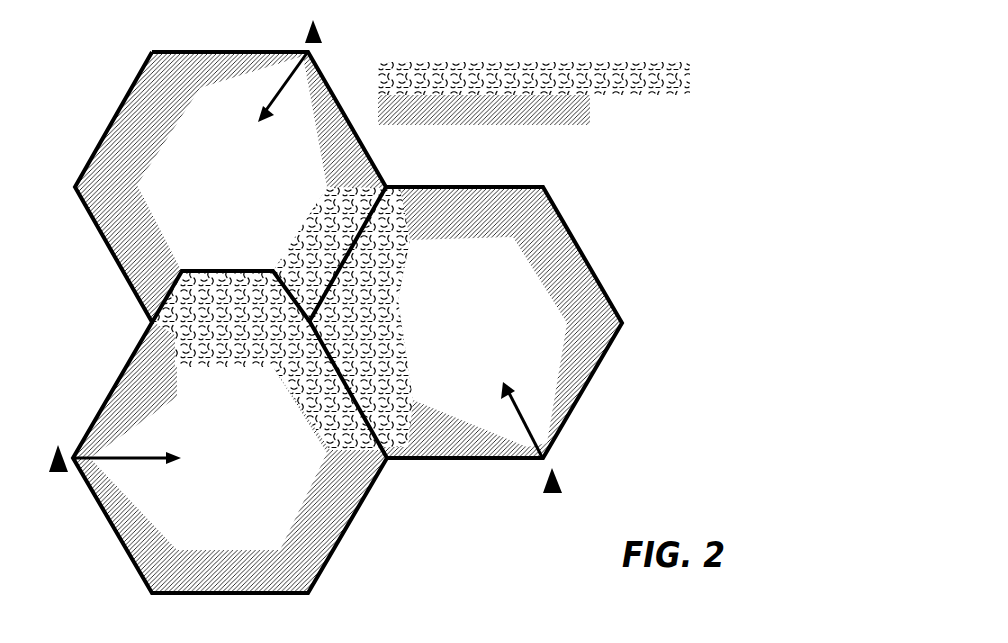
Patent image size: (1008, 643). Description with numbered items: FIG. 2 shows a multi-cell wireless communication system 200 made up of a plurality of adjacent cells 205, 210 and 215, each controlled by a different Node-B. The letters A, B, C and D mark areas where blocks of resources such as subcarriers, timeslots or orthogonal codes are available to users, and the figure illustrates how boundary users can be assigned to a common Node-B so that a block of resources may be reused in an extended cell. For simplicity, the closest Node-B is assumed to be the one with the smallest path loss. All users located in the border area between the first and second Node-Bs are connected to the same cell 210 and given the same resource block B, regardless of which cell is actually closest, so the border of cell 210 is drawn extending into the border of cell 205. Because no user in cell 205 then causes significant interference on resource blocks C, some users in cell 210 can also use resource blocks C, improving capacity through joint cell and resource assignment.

The multi-cell wireless communication system 200 is at (422, 306).
The cell 205 is at (107, 136).
The cell 210 is at (123, 548).
The cell 215 is at (577, 397).